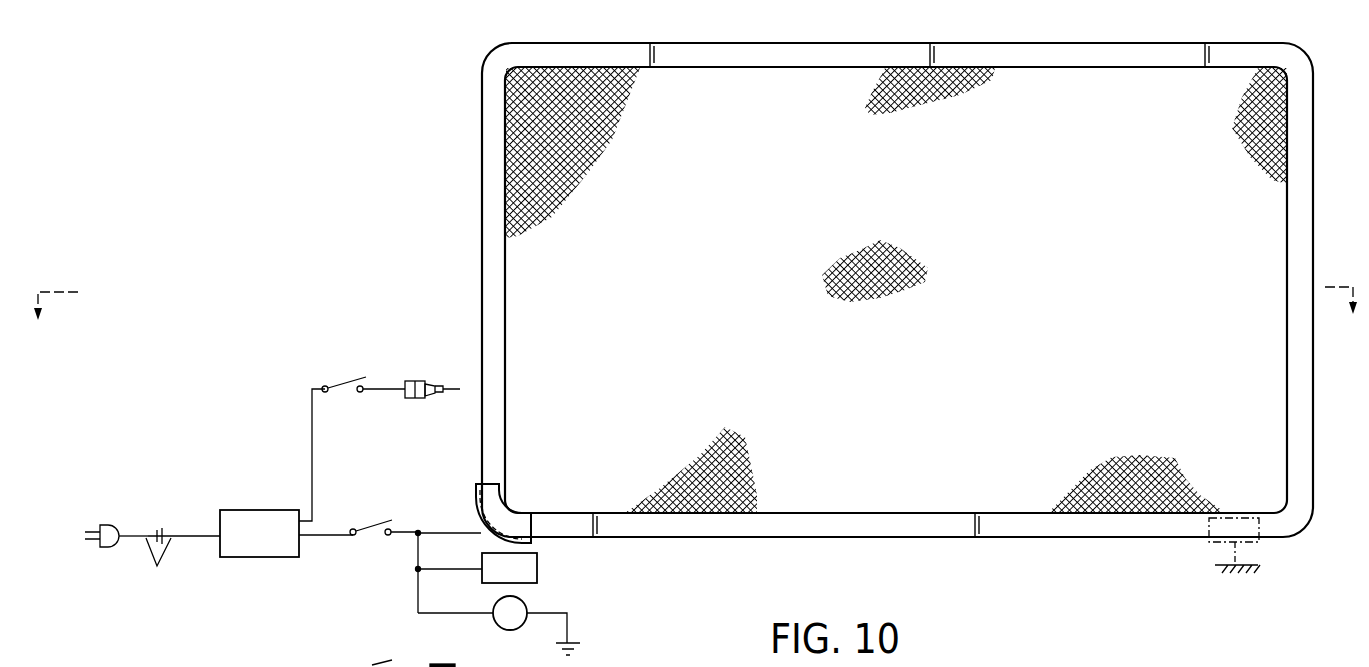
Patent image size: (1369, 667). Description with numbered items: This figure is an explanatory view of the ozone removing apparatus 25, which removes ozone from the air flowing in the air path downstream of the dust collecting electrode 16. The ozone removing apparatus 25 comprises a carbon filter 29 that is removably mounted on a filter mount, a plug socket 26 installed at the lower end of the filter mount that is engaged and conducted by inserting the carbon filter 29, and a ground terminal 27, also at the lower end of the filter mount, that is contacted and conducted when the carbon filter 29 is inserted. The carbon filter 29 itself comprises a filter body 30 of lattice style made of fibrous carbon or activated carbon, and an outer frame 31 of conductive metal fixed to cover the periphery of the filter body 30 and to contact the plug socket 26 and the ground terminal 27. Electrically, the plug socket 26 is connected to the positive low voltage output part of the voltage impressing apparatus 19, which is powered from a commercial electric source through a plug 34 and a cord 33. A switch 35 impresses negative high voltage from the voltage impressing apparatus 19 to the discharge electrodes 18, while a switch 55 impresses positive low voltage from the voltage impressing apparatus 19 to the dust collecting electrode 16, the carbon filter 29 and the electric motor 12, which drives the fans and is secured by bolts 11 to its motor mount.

The bolts 11 is at (698, 323).
The electric motor 12 is at (519, 630).
The dust collecting electrode 16 is at (537, 568).
The discharge electrodes 18 is at (423, 383).
The voltage impressing apparatus 19 is at (252, 510).
The ozone removing apparatus 25 is at (755, 355).
The plug socket 26 is at (472, 491).
The ground terminal 27 is at (1210, 546).
The carbon filter 29 is at (472, 169).
The filter body 30 is at (520, 318).
The outer frame 31 is at (484, 256).
The cord 33 is at (182, 565).
The plug 34 is at (106, 524).
The switch 35 is at (350, 377).
The switch 55 is at (375, 520).